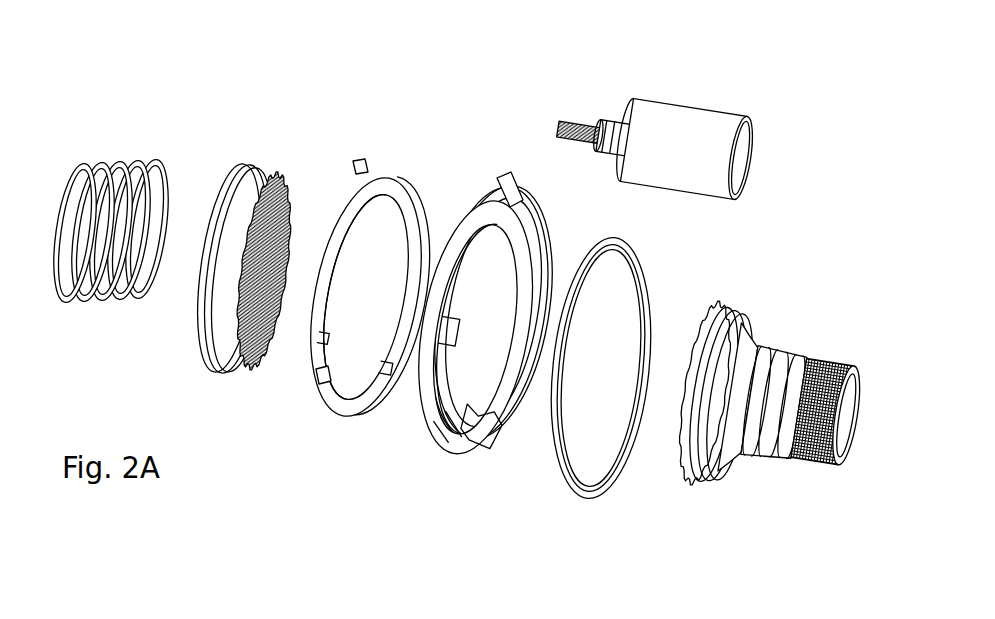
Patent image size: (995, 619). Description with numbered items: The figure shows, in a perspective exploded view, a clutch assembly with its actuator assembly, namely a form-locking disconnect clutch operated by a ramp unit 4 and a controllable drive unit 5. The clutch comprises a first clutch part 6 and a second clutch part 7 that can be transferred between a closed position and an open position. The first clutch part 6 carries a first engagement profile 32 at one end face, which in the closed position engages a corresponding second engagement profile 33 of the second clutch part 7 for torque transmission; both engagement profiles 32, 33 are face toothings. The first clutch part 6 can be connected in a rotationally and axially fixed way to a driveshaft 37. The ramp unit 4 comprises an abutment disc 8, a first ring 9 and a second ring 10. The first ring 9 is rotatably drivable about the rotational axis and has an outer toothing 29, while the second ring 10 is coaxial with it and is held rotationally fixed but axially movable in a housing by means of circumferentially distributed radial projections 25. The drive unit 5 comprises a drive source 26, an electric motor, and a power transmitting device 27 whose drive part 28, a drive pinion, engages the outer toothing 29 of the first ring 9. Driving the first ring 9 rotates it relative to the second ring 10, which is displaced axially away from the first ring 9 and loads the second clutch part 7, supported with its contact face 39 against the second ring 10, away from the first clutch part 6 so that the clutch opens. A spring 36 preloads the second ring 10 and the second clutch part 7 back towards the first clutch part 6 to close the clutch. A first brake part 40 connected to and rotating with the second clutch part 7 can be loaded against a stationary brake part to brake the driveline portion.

The ramp unit 4 is at (435, 130).
The drive unit 5 is at (661, 117).
The first clutch part 6 is at (757, 373).
The second clutch part 7 is at (225, 254).
The abutment disc 8 is at (604, 513).
The first ring 9 is at (493, 353).
The second ring 10 is at (370, 296).
The radial projections 25 is at (359, 159).
The drive source 26 is at (718, 128).
The power transmitting device 27 is at (537, 115).
The drive part 28 is at (581, 126).
The outer toothing 29 is at (540, 218).
The first engagement profile 32 is at (696, 308).
The second engagement profile 33 is at (254, 372).
The spring 36 is at (128, 162).
The driveshaft 37 is at (770, 358).
The contact face 39 is at (226, 372).
The first brake part 40 is at (200, 347).